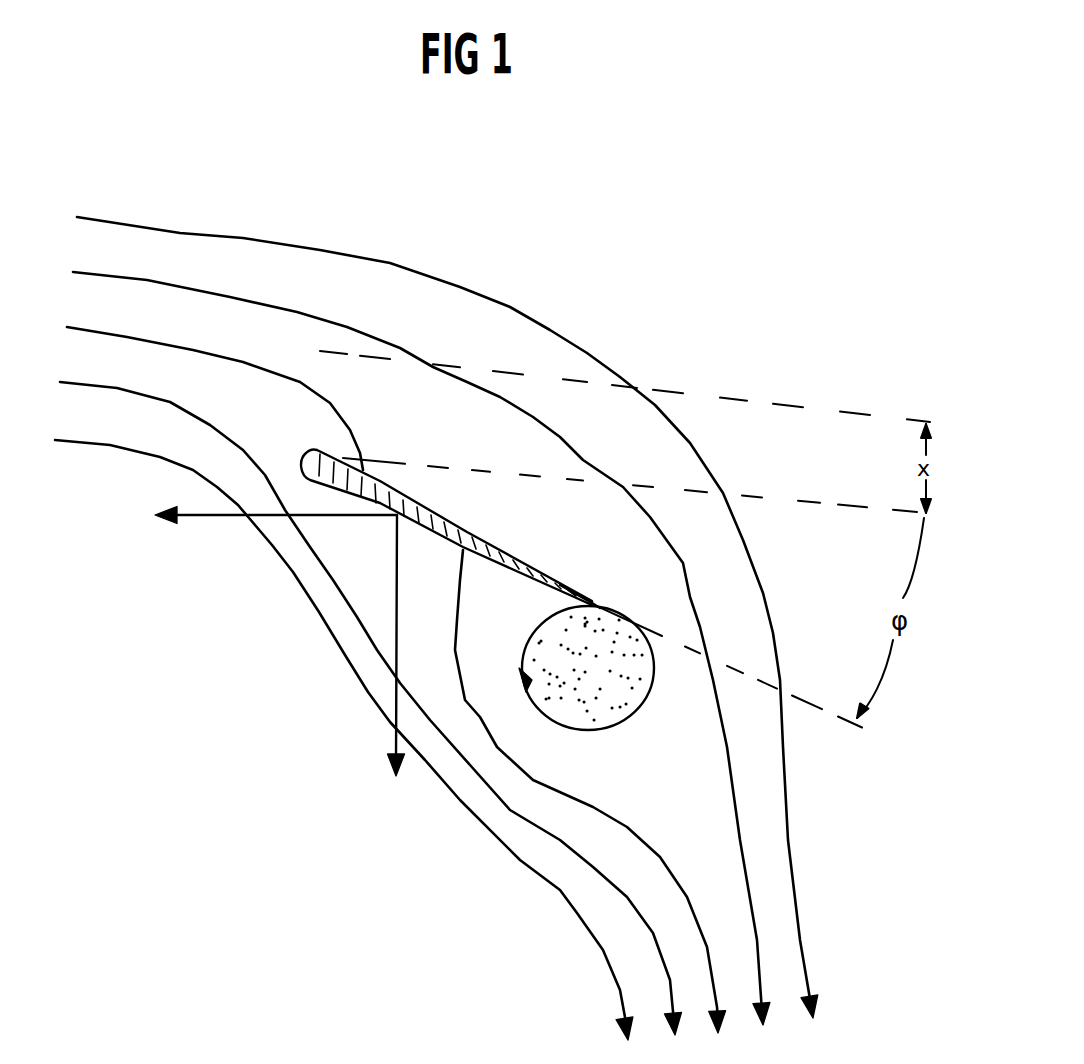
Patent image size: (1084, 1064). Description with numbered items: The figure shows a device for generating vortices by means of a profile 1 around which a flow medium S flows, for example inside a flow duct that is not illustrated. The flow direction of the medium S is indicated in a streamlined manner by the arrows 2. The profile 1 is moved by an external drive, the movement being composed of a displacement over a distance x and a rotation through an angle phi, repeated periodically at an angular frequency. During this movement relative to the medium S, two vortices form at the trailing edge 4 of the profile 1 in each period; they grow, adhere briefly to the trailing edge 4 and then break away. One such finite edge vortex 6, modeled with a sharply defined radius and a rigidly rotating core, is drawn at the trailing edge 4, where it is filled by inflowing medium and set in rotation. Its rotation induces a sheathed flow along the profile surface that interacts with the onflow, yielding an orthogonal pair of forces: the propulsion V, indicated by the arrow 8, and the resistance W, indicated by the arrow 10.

The profile 1 is at (468, 530).
The arrows 2 is at (133, 225).
The trailing edge 4 is at (592, 601).
The finite edge vortex 6 is at (614, 732).
The arrow 8 is at (206, 519).
The arrow 10 is at (395, 697).